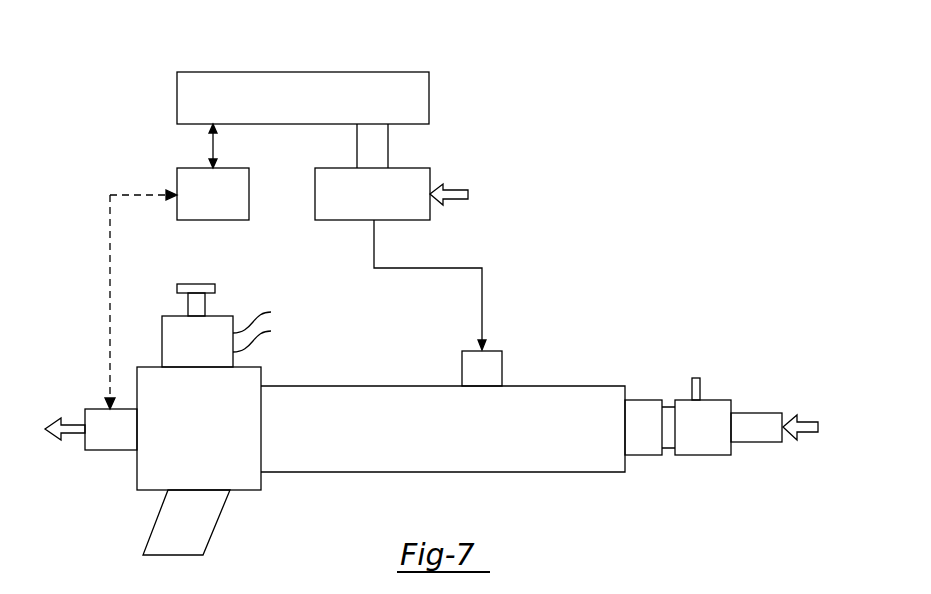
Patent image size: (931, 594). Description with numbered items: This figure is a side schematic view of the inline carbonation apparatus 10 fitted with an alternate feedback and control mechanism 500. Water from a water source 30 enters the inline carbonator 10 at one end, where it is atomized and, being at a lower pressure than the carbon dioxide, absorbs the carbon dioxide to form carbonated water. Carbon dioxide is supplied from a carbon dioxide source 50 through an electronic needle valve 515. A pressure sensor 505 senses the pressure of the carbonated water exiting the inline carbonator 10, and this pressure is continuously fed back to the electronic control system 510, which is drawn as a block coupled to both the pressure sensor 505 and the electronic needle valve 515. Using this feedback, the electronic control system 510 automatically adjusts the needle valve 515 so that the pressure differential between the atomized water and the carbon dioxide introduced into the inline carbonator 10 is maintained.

The feedback and control mechanism 500 is at (137, 104).
The electronic control system 510 is at (299, 72).
The pressure sensor 505 is at (177, 182).
The electronic needle valve 515 is at (415, 168).
The carbon dioxide source 50 is at (455, 190).
The inline carbonation apparatus 10 is at (569, 354).
The water source 30 is at (806, 418).